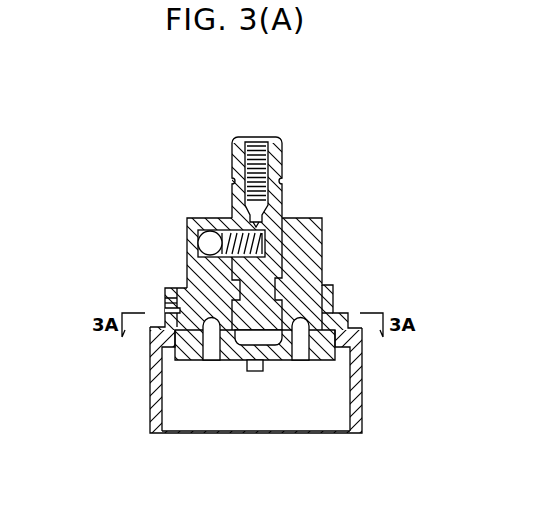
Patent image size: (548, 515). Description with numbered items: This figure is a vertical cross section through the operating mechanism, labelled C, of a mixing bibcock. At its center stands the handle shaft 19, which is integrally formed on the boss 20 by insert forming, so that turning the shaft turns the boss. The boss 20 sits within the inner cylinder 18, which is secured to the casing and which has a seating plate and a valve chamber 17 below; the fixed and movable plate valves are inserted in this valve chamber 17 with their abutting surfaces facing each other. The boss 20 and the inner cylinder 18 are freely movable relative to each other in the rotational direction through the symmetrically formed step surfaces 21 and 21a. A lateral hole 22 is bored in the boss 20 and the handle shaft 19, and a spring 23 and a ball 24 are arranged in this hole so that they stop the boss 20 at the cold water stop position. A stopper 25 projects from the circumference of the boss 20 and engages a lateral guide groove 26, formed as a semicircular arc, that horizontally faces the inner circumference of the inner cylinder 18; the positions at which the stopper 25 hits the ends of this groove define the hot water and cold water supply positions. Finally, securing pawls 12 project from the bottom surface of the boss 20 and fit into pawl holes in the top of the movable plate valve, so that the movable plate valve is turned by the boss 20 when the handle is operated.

The cap assembly C is at (385, 93).
The securing pawls 12 is at (255, 372).
The valve chamber 17 is at (335, 392).
The inner cylinder 18 is at (150, 360).
The handle shaft 19 is at (286, 198).
The boss 20 is at (292, 258).
The step surface 21 is at (175, 288).
The step surface 21a is at (320, 310).
The lateral hole 22 is at (233, 220).
The spring 23 is at (268, 232).
The ball 24 is at (200, 240).
The stopper 25 is at (180, 313).
The lateral guide groove 26 is at (183, 302).